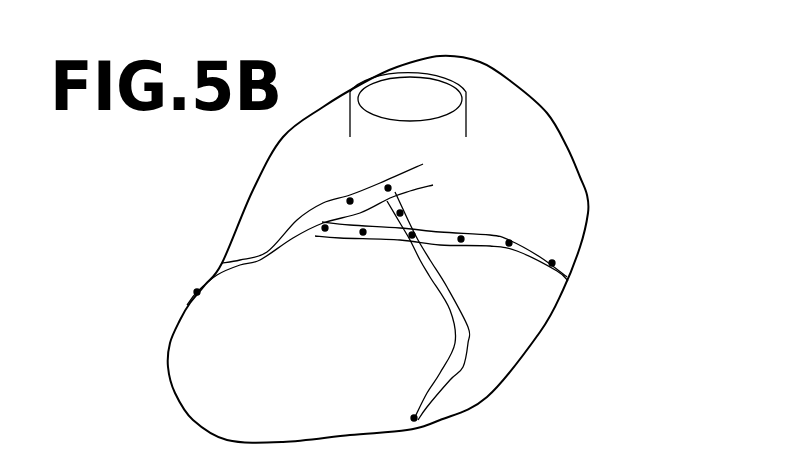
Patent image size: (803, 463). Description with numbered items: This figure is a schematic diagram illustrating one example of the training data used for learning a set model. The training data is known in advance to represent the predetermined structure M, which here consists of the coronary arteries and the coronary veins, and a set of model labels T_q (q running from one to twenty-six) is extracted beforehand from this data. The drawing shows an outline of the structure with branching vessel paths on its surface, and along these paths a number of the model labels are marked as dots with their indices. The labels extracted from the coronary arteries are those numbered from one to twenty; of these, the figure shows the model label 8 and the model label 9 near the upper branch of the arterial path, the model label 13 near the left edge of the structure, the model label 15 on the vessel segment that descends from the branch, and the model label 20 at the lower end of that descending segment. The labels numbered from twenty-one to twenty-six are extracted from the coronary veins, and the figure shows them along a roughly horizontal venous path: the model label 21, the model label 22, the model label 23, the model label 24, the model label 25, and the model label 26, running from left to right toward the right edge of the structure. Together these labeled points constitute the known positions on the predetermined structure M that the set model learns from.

The model label 8 is at (408, 132).
The model label 9 is at (310, 234).
The model label 13 is at (180, 282).
The model label 15 is at (428, 305).
The model label 20 is at (397, 412).
The model label 21 is at (435, 251).
The model label 22 is at (358, 249).
The model label 23 is at (401, 252).
The model label 24 is at (472, 254).
The model label 25 is at (518, 229).
The model label 26 is at (564, 249).